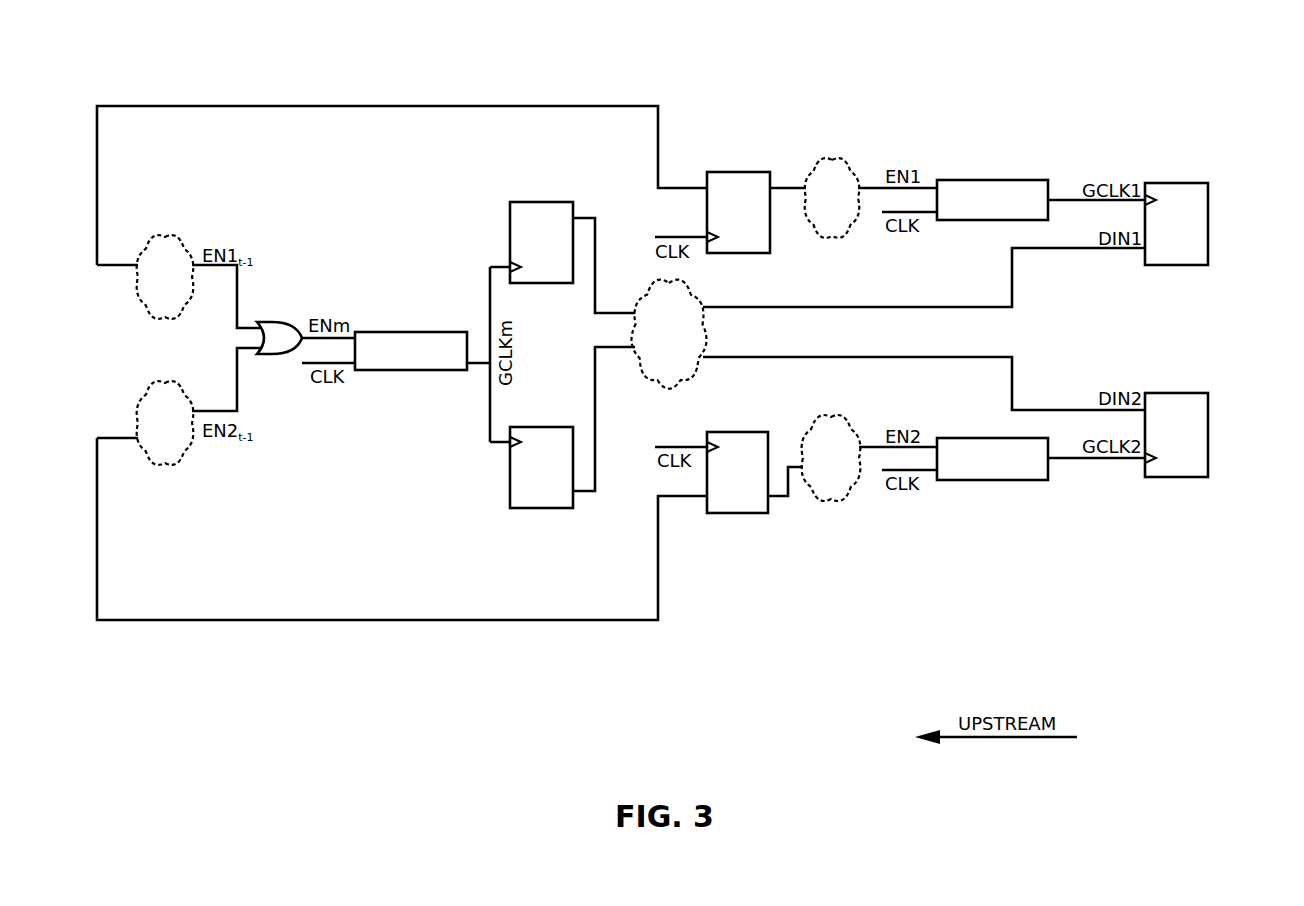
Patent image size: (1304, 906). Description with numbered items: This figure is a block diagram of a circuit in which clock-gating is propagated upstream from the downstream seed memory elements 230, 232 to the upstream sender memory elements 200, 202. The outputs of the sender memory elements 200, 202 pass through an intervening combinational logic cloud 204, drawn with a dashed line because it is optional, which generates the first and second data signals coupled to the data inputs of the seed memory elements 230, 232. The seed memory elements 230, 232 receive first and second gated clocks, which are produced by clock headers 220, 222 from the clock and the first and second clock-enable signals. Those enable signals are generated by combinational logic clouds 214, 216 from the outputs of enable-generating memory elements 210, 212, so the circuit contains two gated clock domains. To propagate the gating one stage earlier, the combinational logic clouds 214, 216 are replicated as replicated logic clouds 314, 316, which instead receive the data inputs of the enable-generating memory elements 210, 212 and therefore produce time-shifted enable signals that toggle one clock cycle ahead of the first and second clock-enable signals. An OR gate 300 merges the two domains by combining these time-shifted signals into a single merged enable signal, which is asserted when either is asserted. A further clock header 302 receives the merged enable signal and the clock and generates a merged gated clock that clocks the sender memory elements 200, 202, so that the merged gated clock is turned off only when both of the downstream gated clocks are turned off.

The sender memory element 200 is at (542, 202).
The sender memory element 202 is at (542, 508).
The intervening combinational logic cloud 204 is at (668, 334).
The enable-generating memory element 210 is at (738, 172).
The enable-generating memory element 212 is at (737, 513).
The combinational logic cloud 214 is at (832, 198).
The combinational logic cloud 216 is at (831, 458).
The clock header 220 is at (947, 180).
The clock header 222 is at (948, 480).
The seed memory element 230 is at (1177, 183).
The seed memory element 232 is at (1178, 477).
The OR gate 300 is at (272, 322).
The clock header 302 is at (445, 372).
The replicated logic cloud 314 is at (165, 277).
The replicated logic cloud 316 is at (165, 423).